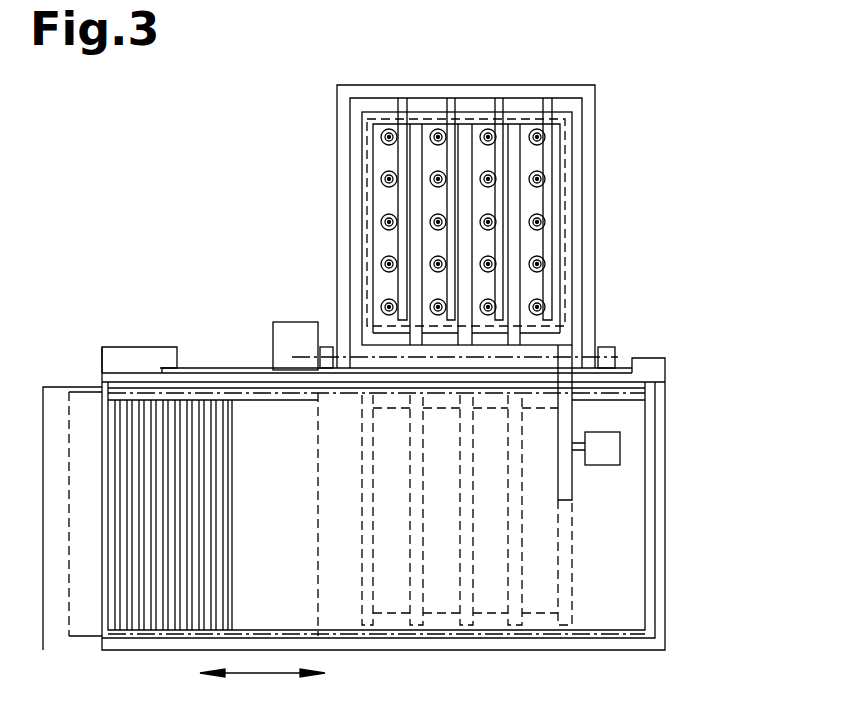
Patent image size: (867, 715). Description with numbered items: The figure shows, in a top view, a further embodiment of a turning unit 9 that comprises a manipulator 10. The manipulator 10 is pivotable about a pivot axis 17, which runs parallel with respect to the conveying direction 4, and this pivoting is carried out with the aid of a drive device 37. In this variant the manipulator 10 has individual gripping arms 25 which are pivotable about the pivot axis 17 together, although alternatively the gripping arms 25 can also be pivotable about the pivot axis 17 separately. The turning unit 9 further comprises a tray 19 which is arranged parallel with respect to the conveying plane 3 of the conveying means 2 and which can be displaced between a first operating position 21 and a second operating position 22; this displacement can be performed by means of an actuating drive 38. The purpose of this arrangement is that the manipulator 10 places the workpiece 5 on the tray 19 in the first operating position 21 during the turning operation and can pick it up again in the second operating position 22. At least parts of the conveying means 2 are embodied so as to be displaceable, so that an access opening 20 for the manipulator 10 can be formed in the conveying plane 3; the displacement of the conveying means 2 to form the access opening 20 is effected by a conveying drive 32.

The conveying means 2 is at (107, 272).
The conveying plane 3 is at (92, 420).
The conveying direction 4 is at (260, 673).
The workpiece 5 is at (563, 142).
The turning unit 9 is at (200, 157).
The manipulator 10 is at (608, 182).
The pivot axis 17 is at (305, 357).
The tray 19 is at (370, 170).
The access opening 20 is at (262, 402).
The first operating position 21 is at (352, 108).
The second operating position 22 is at (600, 502).
The gripping arms 25 is at (402, 103).
The conveying drive 32 is at (120, 357).
The drive device 37 is at (273, 330).
The actuating drive 38 is at (612, 443).